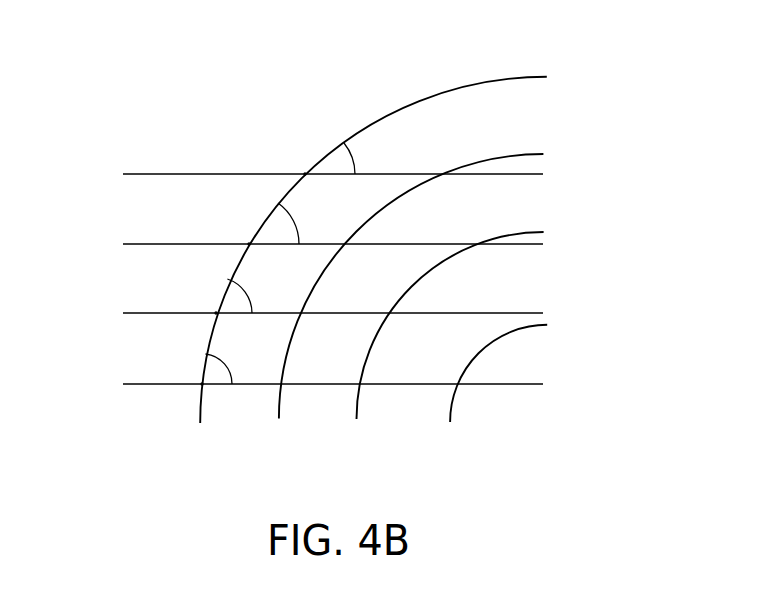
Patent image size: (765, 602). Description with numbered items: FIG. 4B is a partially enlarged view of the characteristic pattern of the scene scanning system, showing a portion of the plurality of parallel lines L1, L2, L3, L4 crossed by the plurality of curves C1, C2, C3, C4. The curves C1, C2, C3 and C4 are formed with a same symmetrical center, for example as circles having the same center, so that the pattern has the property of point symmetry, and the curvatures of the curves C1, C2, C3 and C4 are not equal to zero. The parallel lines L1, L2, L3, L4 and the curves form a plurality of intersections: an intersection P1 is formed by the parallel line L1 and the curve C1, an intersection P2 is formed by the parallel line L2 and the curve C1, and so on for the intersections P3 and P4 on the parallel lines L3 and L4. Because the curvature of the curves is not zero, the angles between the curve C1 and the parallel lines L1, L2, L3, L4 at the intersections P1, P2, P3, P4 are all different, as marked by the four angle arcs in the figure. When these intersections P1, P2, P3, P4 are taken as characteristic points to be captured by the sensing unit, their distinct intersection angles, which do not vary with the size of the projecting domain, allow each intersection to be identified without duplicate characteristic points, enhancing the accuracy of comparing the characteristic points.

The parallel line L1 is at (139, 174).
The parallel line L2 is at (139, 244).
The parallel line L3 is at (139, 313).
The parallel line L4 is at (139, 384).
The curve C1 is at (523, 76).
The curve C2 is at (523, 155).
The curve C3 is at (523, 234).
The curve C4 is at (523, 328).
The intersection P1 is at (305, 174).
The intersection P2 is at (249, 244).
The intersection P3 is at (216, 313).
The intersection P4 is at (202, 384).